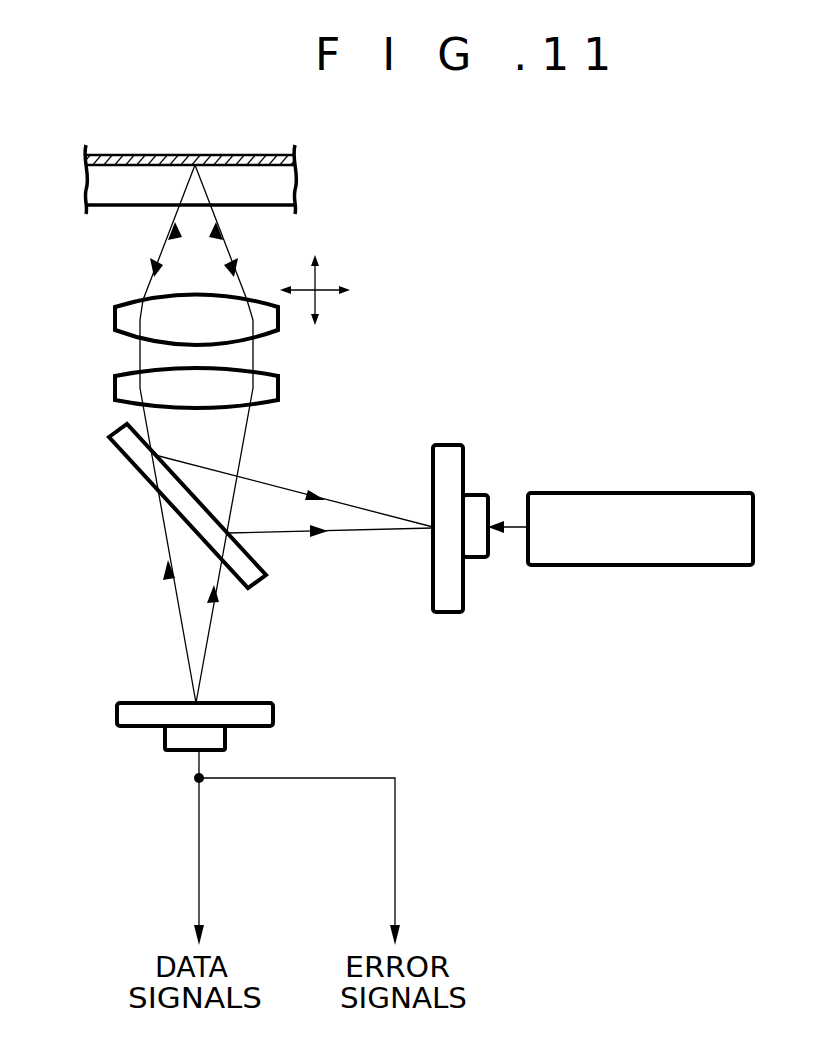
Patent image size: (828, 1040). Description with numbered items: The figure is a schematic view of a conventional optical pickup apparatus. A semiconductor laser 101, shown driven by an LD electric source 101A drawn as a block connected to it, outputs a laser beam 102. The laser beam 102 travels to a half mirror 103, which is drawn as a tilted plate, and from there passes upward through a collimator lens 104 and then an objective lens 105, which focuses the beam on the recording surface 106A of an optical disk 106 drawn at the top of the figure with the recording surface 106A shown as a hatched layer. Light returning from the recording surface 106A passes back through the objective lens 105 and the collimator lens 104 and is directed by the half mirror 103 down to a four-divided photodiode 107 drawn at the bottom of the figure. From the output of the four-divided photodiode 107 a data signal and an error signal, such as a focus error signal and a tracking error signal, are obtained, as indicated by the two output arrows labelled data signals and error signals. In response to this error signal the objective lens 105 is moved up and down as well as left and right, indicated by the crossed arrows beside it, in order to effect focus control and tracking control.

The semiconductor laser 101 is at (448, 445).
The LD electric source 101A is at (595, 493).
The laser beam 102 is at (290, 487).
The half mirror 103 is at (136, 460).
The collimator lens 104 is at (118, 386).
The objective lens 105 is at (118, 310).
The optical disk 106 is at (283, 190).
The recording surface 106A is at (270, 153).
The four-divided photodiode 107 is at (135, 710).